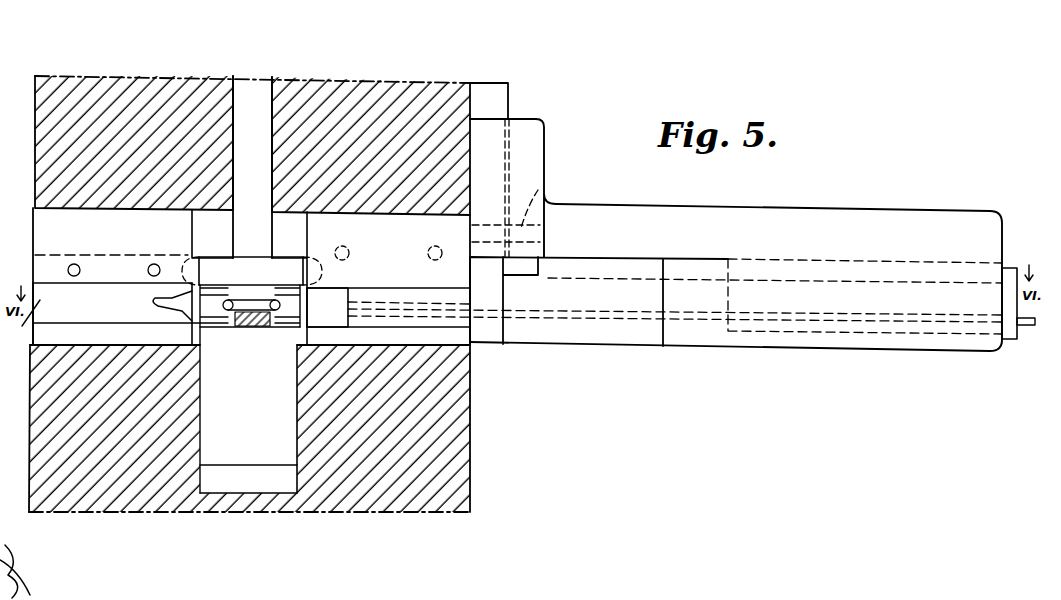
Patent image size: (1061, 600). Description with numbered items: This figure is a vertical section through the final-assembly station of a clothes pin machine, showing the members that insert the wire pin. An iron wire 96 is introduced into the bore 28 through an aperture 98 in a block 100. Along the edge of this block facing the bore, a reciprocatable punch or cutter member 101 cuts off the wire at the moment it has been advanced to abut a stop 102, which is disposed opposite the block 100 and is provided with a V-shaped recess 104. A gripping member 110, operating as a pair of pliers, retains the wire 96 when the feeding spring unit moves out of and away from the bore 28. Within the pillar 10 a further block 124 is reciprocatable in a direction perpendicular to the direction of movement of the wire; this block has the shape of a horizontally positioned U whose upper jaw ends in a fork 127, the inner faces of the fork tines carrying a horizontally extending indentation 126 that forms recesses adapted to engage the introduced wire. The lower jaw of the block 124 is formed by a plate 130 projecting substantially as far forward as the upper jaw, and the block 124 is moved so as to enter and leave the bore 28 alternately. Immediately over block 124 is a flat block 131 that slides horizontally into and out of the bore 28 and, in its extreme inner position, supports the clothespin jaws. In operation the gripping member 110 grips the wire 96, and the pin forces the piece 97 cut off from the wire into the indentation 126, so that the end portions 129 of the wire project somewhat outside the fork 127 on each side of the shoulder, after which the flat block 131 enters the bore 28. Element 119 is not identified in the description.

The pillar 10 is at (455, 424).
The bore 28 is at (240, 88).
The iron wire 96 is at (1028, 331).
The piece cut off from the wire 97 is at (235, 322).
The aperture 98 is at (400, 318).
The block 100 is at (437, 322).
The reciprocatable punch or cutter member 101 is at (335, 297).
The stop 102 is at (33, 338).
The V-shaped recess 104 is at (168, 306).
The gripping member 110 is at (500, 100).
The flange housing 119 is at (546, 191).
The further block 124 is at (280, 458).
The indentation 126 is at (225, 312).
The fork 127 is at (283, 325).
The end portions of the wire 129 is at (258, 325).
The plate 130 is at (248, 486).
The flat block 131 is at (280, 263).